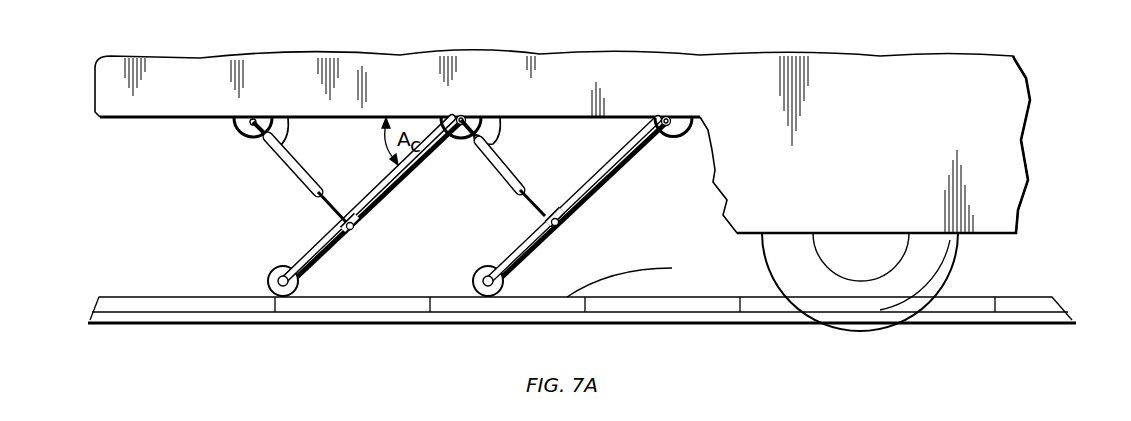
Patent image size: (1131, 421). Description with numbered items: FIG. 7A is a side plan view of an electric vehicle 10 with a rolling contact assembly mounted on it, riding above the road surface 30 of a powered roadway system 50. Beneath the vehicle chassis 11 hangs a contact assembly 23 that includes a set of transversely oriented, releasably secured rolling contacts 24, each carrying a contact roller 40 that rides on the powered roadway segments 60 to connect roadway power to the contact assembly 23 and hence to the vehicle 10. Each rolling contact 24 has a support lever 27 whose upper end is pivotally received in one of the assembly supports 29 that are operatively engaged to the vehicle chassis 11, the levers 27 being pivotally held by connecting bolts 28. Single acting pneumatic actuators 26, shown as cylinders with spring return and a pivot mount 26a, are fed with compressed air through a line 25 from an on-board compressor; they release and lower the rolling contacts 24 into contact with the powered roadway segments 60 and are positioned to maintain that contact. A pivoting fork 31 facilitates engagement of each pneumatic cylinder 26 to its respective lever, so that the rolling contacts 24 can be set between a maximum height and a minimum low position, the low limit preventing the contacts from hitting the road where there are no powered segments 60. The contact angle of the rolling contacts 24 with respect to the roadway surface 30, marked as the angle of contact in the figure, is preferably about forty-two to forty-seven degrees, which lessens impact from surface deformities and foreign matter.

The electric vehicle 10 is at (851, 147).
The vehicle chassis 11 is at (133, 119).
The contact assembly 23 is at (392, 221).
The rolling contacts 24 is at (322, 257).
The line 25 is at (291, 137).
The pneumatic actuators 26 is at (287, 161).
The pivot mount 26a is at (256, 119).
The support lever 27 is at (413, 173).
The connecting bolts 28 is at (458, 116).
The assembly supports 29 is at (236, 118).
The road surface 30 is at (1073, 320).
The pivoting fork 31 is at (568, 221).
The contact roller 40 is at (268, 276).
The powered roadway system 50 is at (1028, 297).
The powered roadway segments 60 is at (657, 297).